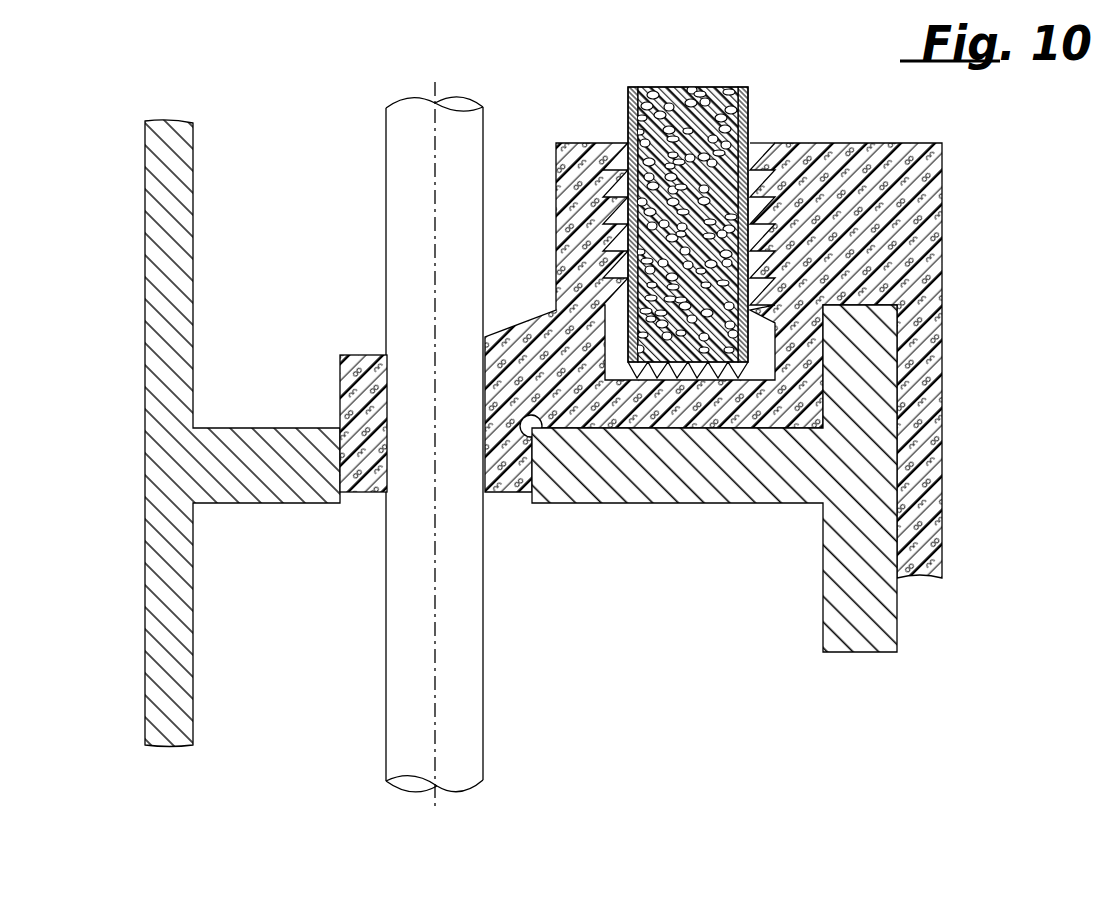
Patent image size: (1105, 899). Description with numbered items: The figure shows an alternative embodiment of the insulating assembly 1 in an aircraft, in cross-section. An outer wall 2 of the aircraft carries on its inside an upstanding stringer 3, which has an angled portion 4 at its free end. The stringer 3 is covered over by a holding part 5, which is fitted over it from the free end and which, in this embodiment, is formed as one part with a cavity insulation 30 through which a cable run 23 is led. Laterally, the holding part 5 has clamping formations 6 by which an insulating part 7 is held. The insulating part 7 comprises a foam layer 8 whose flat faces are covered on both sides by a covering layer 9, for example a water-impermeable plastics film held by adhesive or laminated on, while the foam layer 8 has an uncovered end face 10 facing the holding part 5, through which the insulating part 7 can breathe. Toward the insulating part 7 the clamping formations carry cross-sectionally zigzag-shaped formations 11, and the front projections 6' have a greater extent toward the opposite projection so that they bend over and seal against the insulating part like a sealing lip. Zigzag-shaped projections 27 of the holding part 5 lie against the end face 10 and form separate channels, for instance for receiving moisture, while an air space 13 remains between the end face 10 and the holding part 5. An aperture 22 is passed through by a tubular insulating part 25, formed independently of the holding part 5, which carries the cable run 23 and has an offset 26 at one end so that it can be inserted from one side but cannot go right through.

The insulating assembly 1 is at (1012, 595).
The outer wall 2 is at (160, 372).
The stringer 3 is at (713, 480).
The angled portion 4 is at (885, 625).
The holding part 5 is at (928, 278).
The clamping formation 6 is at (597, 85).
The front projection 6' is at (675, 95).
The insulating part 7 is at (712, 88).
The foam layer 8 is at (685, 103).
The covering layer 9 is at (635, 87).
The end face 10 is at (850, 243).
The zigzag-shaped formation 11 is at (620, 193).
The air space 13 is at (760, 368).
The aperture 22 is at (338, 467).
The cable run 23 is at (403, 162).
The tubular insulating part 25 is at (348, 365).
The offset 26 is at (330, 425).
The zigzag-shaped projection 27 is at (660, 366).
The cavity insulation 30 is at (508, 485).